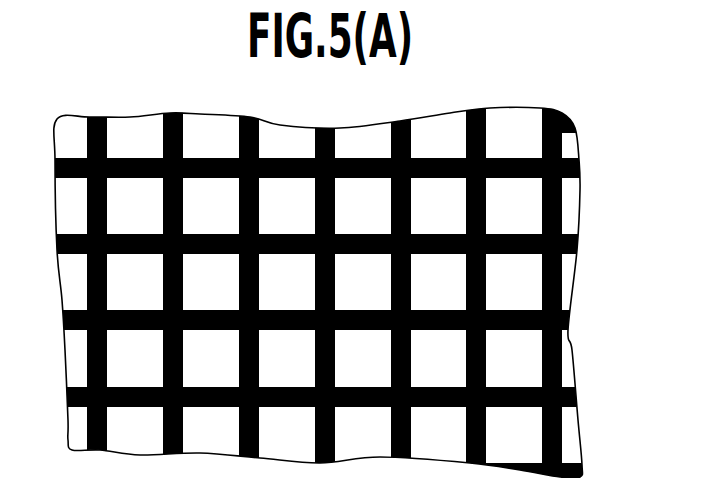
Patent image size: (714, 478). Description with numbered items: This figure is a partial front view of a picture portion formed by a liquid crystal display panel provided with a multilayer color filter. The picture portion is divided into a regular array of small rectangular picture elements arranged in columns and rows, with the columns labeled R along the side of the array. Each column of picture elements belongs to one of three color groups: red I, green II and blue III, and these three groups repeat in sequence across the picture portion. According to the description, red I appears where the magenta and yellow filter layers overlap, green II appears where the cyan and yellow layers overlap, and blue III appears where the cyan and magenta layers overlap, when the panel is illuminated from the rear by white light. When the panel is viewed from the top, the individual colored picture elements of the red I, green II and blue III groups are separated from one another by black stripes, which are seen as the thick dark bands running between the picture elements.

The row of color filter elements R is at (568, 141).
The red I is at (131, 81).
The green II is at (201, 81).
The blue III is at (524, 105).